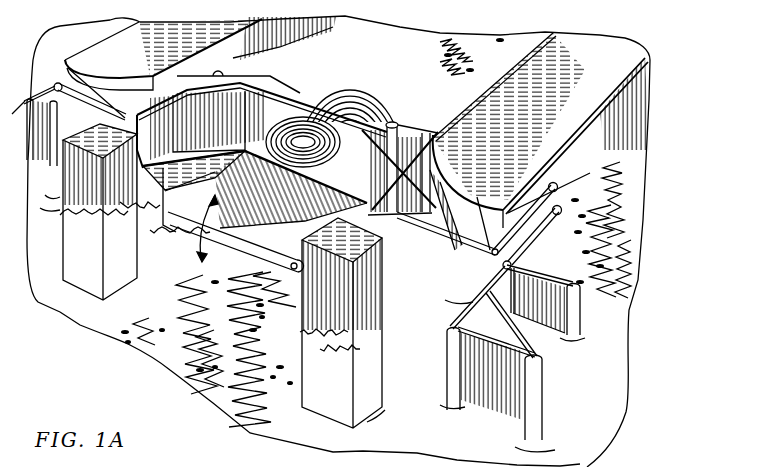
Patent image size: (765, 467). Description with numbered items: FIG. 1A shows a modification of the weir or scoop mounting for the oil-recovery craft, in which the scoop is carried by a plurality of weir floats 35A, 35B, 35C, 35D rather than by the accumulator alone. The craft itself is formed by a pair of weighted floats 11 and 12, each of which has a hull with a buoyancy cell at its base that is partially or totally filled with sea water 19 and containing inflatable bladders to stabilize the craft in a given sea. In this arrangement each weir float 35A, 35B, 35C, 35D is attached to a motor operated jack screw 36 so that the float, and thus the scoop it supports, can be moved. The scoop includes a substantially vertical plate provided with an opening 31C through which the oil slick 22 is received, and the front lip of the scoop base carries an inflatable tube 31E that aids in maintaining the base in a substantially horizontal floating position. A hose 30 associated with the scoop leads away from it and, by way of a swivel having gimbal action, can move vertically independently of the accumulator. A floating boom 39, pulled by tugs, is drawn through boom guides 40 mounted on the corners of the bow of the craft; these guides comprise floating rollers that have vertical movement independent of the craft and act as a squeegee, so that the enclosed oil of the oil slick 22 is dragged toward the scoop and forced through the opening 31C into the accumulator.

The weighted float 11 is at (108, 44).
The weighted float 12 is at (618, 67).
The sea water 19 is at (628, 392).
The oil slick 22 is at (251, 438).
The hose 30 is at (364, 100).
The opening 31C is at (266, 189).
The inflatable tube 31E is at (190, 259).
The weir float 35A is at (115, 268).
The weir float 35B is at (284, 38).
The weir float 35C is at (443, 141).
The weir float 35D is at (372, 392).
The motor operated jack screw 36 is at (412, 270).
The boom 39 is at (52, 82).
The boom guide 40 is at (62, 190).